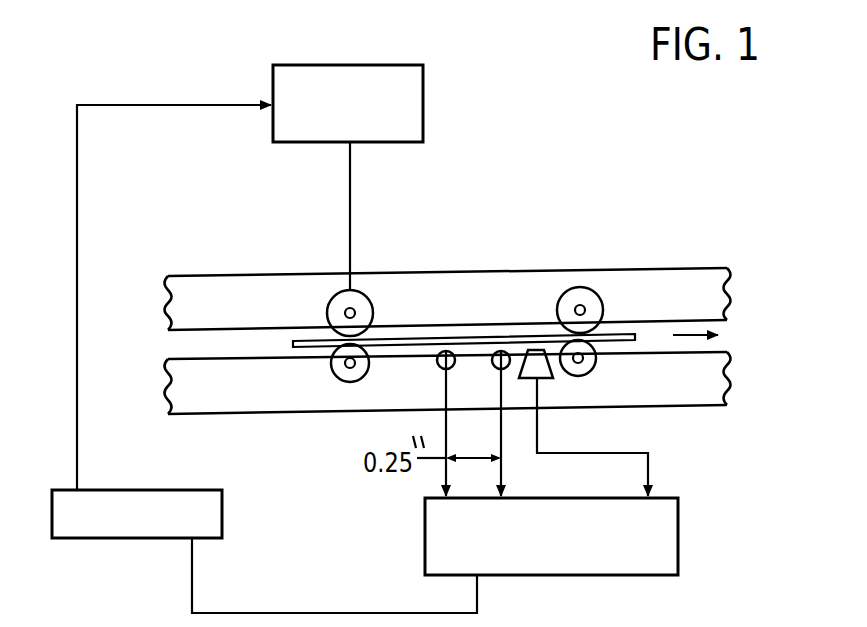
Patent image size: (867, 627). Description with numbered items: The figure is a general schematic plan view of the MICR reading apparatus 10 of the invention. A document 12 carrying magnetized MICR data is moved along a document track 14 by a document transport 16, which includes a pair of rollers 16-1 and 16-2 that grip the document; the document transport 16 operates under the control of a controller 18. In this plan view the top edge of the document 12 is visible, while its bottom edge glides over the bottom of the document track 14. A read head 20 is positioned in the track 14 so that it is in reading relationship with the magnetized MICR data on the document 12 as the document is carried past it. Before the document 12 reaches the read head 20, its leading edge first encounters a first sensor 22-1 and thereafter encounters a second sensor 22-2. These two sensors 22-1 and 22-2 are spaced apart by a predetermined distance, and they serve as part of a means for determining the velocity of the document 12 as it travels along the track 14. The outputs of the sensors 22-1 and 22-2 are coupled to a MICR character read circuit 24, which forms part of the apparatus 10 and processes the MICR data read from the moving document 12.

The apparatus 10 is at (647, 180).
The document 12 is at (307, 340).
The document track 14 is at (202, 307).
The document transport 16 is at (415, 88).
The roller 16-1 is at (358, 303).
The roller 16-2 is at (348, 376).
The controller 18 is at (152, 491).
The read head 20 is at (541, 365).
The first sensor 22-1 is at (453, 351).
The second sensor 22-2 is at (507, 351).
The MICR character read circuit 24 is at (684, 547).